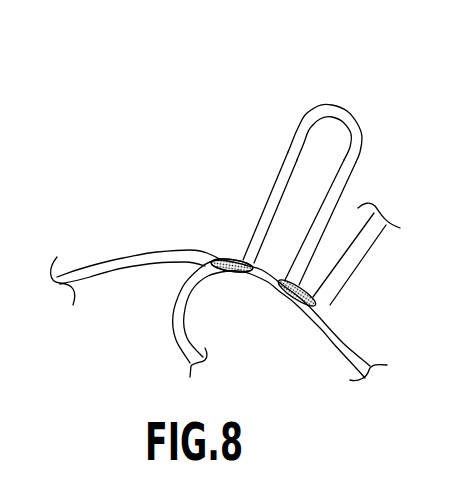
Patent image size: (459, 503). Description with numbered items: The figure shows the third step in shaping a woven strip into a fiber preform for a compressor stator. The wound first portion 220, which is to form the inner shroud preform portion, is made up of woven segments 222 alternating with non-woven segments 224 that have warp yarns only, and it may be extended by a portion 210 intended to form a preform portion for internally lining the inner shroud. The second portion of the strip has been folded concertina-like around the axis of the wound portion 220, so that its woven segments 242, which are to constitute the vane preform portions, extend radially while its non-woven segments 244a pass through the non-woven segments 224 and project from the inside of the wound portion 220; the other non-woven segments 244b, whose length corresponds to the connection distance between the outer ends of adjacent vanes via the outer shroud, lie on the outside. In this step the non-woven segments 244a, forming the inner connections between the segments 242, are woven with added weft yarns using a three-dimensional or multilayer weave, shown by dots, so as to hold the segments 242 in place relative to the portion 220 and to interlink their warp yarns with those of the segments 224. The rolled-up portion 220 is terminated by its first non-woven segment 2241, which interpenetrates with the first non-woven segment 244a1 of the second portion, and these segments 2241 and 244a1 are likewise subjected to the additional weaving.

The portion for internally lining the inner shroud 210 is at (177, 327).
The first portion 220 is at (88, 268).
The woven segments 222 is at (277, 267).
The non-woven segments 224 is at (292, 286).
The first non-woven segment 2241 is at (222, 272).
The woven segments 242 is at (290, 155).
The non-woven segments 244a is at (293, 305).
The first non-woven segment 244a1 is at (224, 260).
The non-woven segments 244b is at (343, 120).